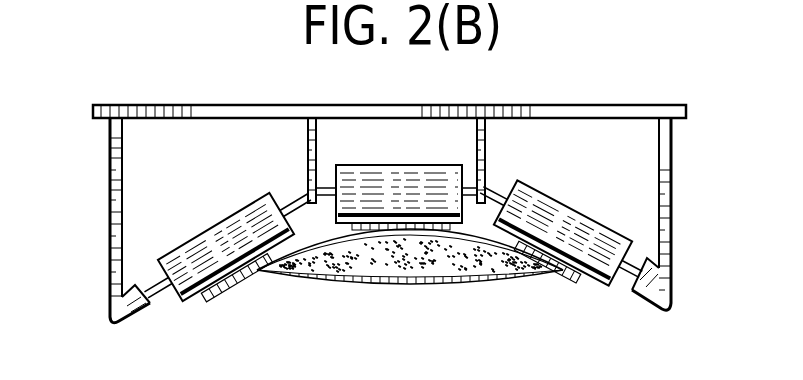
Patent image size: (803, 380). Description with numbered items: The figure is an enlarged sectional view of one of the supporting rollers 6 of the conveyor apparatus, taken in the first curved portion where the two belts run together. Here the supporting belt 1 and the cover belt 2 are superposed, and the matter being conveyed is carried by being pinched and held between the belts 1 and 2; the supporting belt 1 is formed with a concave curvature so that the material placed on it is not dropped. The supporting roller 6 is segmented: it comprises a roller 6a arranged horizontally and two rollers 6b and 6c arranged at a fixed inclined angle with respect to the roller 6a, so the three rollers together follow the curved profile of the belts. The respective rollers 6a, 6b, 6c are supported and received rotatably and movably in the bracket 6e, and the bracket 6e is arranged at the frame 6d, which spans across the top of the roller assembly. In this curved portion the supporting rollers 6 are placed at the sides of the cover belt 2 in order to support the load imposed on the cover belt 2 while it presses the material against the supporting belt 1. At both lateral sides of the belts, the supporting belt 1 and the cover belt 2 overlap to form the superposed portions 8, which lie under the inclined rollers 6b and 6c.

The supporting belt 1 is at (316, 278).
The cover belt 2 is at (514, 248).
The supporting roller 6 is at (553, 101).
The roller 6a is at (402, 172).
The roller 6b is at (215, 233).
The roller 6c is at (583, 223).
The frame 6d is at (463, 105).
The bracket 6e is at (110, 157).
The superposed portions 8 is at (236, 292).